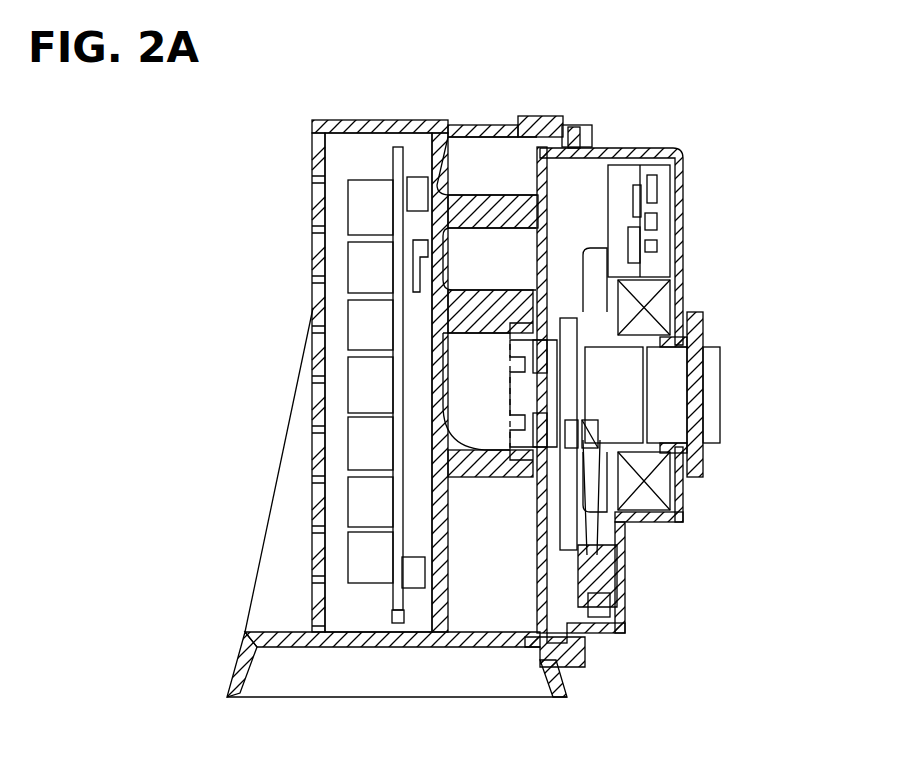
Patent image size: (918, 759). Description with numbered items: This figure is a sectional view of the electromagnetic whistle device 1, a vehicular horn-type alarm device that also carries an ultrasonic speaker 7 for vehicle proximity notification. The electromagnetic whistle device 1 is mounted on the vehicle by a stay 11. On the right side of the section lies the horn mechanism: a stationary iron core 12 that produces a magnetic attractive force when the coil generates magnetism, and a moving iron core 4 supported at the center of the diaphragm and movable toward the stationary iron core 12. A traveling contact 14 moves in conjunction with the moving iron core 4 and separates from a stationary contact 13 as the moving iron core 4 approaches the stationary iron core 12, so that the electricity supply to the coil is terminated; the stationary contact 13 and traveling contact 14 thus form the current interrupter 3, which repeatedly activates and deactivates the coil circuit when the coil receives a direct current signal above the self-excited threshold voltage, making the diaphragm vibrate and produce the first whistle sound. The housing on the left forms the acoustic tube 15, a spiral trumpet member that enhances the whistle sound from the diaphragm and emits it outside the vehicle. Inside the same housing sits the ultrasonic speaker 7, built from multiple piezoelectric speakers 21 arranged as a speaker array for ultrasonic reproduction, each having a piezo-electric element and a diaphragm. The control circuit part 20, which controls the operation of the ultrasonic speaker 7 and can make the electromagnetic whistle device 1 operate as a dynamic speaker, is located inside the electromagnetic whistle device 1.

The electromagnetic whistle device 1 is at (468, 92).
The current interrupter 3 is at (660, 308).
The moving iron core 4 is at (622, 410).
The ultrasonic speaker 7 is at (435, 108).
The stay 11 is at (702, 322).
The stationary iron core 12 is at (668, 377).
The stationary contact 13 is at (600, 455).
The traveling contact 14 is at (598, 440).
The acoustic tube 15 is at (493, 160).
The control circuit part 20 is at (657, 170).
The piezoelectric speaker 21 is at (357, 318).